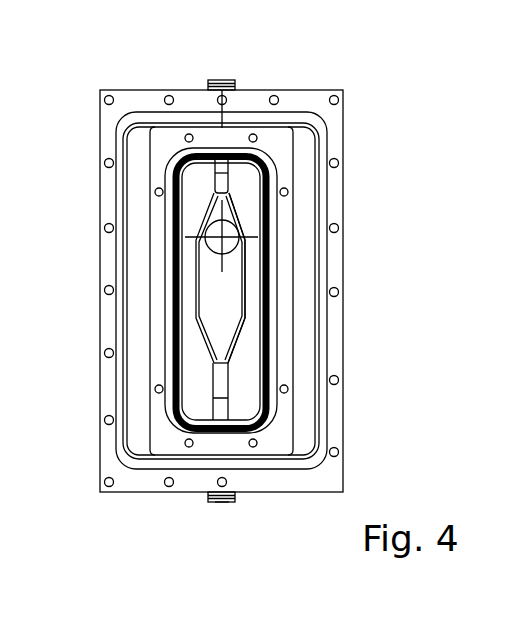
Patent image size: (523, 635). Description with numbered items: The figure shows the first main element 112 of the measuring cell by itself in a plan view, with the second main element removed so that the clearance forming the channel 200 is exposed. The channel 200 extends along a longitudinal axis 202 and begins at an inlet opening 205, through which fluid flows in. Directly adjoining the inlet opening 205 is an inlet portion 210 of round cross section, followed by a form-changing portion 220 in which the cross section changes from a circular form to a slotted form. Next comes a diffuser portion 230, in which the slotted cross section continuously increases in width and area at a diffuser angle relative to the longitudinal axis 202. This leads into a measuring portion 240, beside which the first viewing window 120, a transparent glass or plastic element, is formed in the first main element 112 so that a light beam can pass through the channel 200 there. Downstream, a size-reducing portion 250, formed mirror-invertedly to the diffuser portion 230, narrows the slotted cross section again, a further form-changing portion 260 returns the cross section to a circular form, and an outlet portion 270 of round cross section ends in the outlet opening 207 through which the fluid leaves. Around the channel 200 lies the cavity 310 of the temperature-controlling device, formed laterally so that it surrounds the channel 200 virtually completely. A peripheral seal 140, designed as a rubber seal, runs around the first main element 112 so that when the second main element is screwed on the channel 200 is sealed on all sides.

The first main element 112 is at (283, 135).
The cavity 310 is at (141, 132).
The inlet opening 205 is at (226, 80).
The outlet opening 207 is at (226, 502).
The longitudinal axis 202 is at (221, 506).
The inlet portion 210 is at (265, 158).
The peripheral seal 140 is at (176, 353).
The channel 200 is at (217, 290).
The form-changing portion 220 is at (222, 164).
The diffuser portion 230 is at (240, 200).
The first viewing window 120 is at (228, 226).
The measuring portion 240 is at (241, 250).
The size-reducing portion 250 is at (235, 326).
The further form-changing portion 260 is at (222, 368).
The outlet portion 270 is at (217, 410).